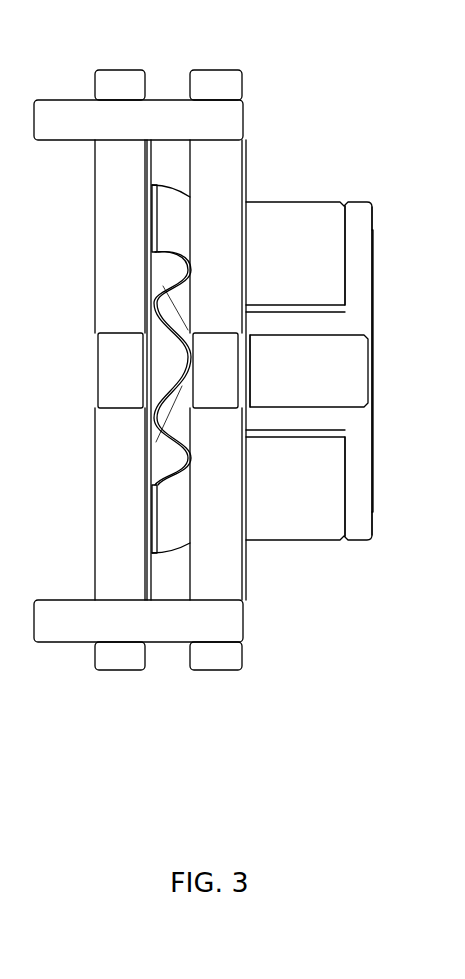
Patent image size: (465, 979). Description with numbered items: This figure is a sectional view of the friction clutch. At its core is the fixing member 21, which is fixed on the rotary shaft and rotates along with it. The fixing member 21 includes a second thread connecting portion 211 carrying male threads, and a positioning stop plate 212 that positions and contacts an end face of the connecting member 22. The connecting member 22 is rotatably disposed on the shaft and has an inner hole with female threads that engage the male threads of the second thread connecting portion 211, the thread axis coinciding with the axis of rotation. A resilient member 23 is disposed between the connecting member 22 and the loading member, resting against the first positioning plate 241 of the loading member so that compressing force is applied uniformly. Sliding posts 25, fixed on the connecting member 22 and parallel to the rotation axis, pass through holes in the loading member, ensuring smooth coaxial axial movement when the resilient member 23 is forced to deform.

The fixing member 21 is at (351, 444).
The second thread connecting portion 211 is at (333, 509).
The positioning stop plate 212 is at (380, 421).
The connecting member 22 is at (309, 312).
The resilient member 23 is at (235, 436).
The first positioning plate 241 is at (95, 65).
The sliding posts 25 is at (164, 333).